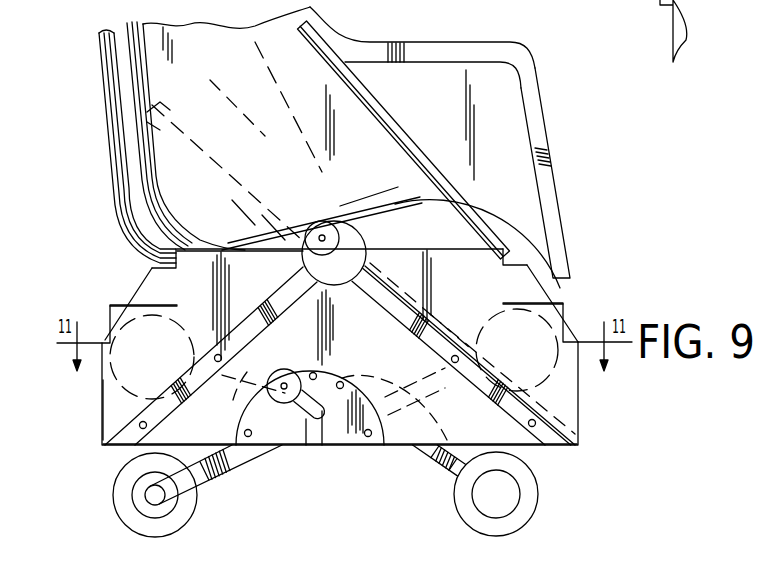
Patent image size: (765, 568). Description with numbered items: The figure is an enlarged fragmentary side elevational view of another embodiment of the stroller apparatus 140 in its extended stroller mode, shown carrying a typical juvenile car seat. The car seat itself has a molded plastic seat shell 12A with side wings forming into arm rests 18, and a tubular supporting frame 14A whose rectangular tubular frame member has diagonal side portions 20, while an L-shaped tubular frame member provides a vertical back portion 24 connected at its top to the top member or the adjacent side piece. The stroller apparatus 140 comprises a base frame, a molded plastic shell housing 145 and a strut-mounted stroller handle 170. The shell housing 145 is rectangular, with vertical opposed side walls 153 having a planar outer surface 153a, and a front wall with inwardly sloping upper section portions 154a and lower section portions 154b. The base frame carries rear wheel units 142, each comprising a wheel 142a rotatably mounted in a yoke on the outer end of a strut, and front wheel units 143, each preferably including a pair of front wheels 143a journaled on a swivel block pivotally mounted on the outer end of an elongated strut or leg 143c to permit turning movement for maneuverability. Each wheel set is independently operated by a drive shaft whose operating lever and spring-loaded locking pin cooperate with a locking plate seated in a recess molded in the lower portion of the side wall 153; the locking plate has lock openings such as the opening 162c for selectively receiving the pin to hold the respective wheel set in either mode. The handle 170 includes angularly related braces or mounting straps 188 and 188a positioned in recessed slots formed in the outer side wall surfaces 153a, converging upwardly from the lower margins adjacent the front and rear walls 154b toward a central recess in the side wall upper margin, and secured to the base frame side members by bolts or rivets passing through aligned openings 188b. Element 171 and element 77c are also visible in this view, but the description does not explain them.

The tubular supporting frame 14A is at (98, 83).
The vertical back portion 24 is at (113, 140).
The arm rests 18 is at (437, 55).
The seat shell 12A is at (550, 132).
The latch member 77c is at (648, 0).
The diagonal side portions 20 is at (383, 113).
The support plate 171 is at (290, 173).
The stroller handle 170 is at (429, 236).
The shell housing 145 is at (579, 412).
The stroller apparatus 140 is at (579, 292).
The side wall 153 is at (148, 273).
The planar outer surface 153a is at (136, 290).
The upper section portions 154a is at (572, 328).
The lower section portions 154b is at (100, 428).
The brace or mounting strap 188a is at (293, 295).
The aligned openings 188b is at (228, 348).
The brace or mounting strap 188 is at (548, 442).
The lock opening 162c is at (341, 381).
The rear wheel units 142 is at (113, 507).
The wheel 142a is at (113, 485).
The front wheel units 143 is at (536, 521).
The front wheels 143a is at (537, 503).
The strut or leg 143c is at (427, 450).